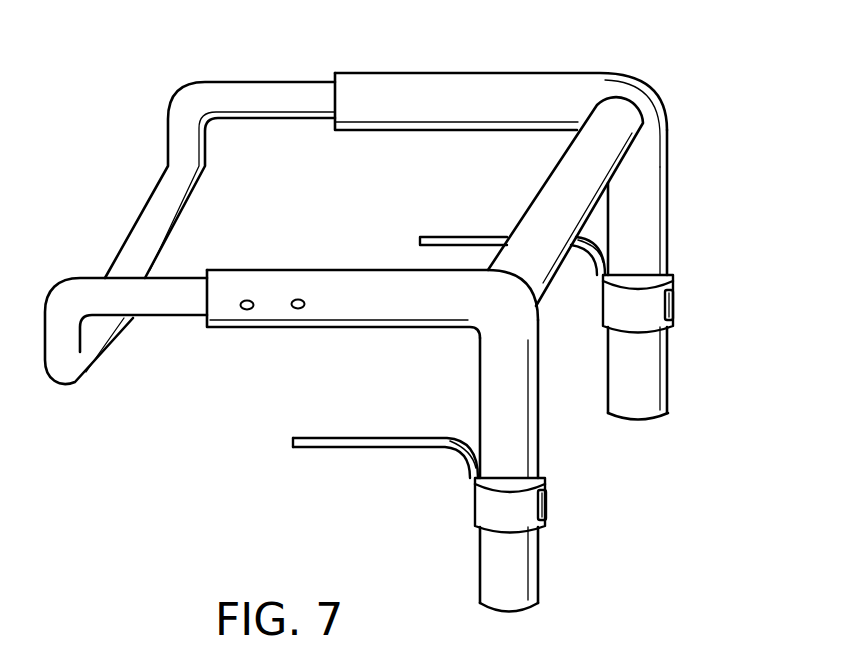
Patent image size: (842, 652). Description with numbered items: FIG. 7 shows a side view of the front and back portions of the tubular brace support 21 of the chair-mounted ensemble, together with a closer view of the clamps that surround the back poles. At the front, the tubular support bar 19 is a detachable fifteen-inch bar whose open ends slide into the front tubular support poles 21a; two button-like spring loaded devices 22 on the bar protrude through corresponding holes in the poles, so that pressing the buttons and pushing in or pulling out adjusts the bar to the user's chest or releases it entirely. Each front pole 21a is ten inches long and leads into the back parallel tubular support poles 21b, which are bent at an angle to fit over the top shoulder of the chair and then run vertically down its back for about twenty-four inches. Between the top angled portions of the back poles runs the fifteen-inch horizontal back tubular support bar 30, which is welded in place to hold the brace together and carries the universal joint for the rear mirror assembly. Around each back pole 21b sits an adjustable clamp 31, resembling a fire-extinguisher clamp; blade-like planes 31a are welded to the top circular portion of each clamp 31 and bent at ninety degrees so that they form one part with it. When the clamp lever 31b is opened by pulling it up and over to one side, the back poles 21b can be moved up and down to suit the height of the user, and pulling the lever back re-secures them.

The front tubular support bar 19 is at (263, 92).
The brace support 21 is at (477, 308).
The front tubular support poles 21a is at (419, 88).
The back parallel tubular support poles 21b is at (658, 168).
The button-like spring loaded devices 22 is at (293, 311).
The horizontal back tubular support bar 30 is at (562, 157).
The adjustable clamps 31 is at (592, 242).
The blade-like planes 31a is at (462, 237).
The clamp lever 31b is at (676, 300).